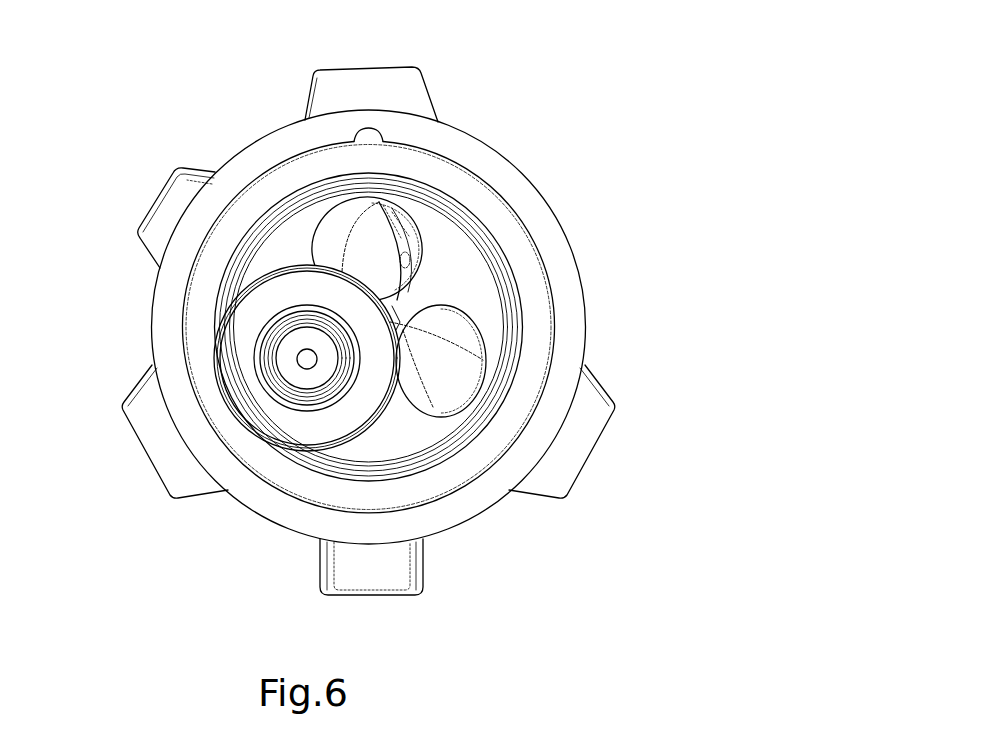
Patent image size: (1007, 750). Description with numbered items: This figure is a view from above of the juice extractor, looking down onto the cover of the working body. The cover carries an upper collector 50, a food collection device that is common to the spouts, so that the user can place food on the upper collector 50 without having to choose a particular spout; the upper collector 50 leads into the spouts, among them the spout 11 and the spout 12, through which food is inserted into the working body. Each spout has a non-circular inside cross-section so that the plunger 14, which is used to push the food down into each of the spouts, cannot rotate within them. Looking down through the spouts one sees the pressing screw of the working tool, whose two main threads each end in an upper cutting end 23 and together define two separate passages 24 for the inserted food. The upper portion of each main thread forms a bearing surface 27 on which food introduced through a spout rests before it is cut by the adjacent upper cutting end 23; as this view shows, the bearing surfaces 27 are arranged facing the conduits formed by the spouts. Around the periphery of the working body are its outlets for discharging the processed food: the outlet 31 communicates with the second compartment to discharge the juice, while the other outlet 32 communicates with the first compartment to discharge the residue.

The upper collector 50 is at (277, 233).
The outlet 32 is at (170, 203).
The outlet 31 is at (378, 580).
The spout 11 is at (412, 273).
The bearing surface 27 is at (368, 245).
The spout 12 is at (478, 341).
The upper cutting end 23 is at (410, 259).
The passage 24 is at (408, 266).
The plunger 14 is at (300, 435).